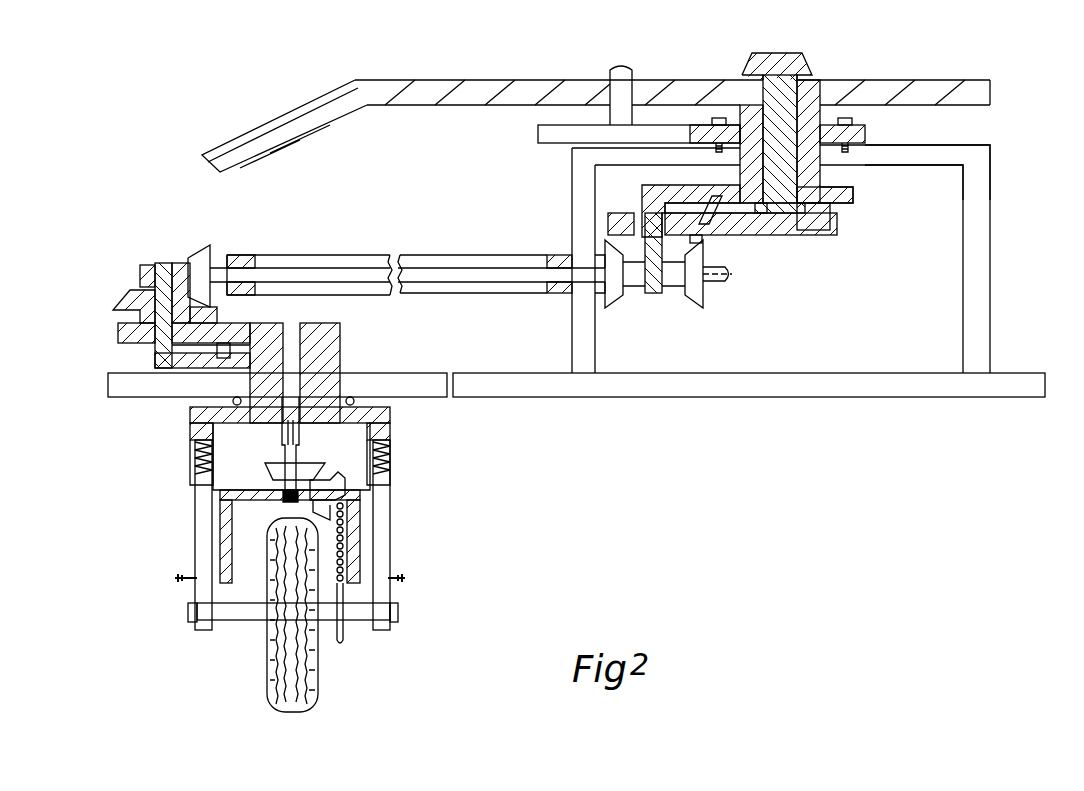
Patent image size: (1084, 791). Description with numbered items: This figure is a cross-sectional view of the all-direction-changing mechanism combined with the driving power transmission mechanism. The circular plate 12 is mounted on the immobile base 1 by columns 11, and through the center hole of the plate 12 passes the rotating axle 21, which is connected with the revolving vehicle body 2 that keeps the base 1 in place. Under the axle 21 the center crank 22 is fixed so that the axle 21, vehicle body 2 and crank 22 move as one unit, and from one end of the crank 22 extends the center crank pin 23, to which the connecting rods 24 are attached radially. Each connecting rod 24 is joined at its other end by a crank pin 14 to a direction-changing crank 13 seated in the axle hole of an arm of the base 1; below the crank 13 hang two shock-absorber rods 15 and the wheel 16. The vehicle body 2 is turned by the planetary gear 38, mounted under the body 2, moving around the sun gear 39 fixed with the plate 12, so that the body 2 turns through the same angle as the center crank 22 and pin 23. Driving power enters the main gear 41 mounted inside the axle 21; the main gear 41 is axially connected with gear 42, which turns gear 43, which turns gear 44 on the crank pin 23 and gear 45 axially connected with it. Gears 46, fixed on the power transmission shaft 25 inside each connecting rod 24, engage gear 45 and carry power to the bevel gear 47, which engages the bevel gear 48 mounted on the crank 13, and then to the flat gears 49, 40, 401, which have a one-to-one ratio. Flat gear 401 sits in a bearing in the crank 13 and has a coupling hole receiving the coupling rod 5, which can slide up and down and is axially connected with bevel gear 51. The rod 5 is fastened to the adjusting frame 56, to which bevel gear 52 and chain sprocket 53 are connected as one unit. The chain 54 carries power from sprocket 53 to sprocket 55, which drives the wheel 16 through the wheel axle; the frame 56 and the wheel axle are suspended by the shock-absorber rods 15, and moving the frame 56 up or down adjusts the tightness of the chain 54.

The immobile base 1 is at (680, 398).
The revolving vehicle body 2 is at (332, 93).
The coupling rod 5 is at (282, 443).
The columns 11 is at (572, 170).
The circular plate 12 is at (970, 147).
The direction-changing crank 13 is at (155, 350).
The crank pin 14 is at (162, 265).
The shock-absorber rods 15 is at (197, 503).
The wheel 16 is at (268, 675).
The rotating axle 21 is at (812, 105).
The center crank 22 is at (855, 203).
The center crank pin 23 is at (652, 295).
The connecting rods 24 is at (462, 293).
The power transmission shaft 25 is at (487, 277).
The planetary gear 38 is at (538, 133).
The sun gear 39 is at (843, 125).
The flat gear 40 is at (218, 342).
The flat gear 401 is at (327, 323).
The main gear 41 is at (790, 55).
The gear 42 is at (838, 235).
The gear 43 is at (735, 232).
The gear 44 is at (660, 240).
The gear 45 is at (702, 247).
The gears 46 is at (608, 305).
The bevel gear 47 is at (197, 247).
The bevel gear 48 is at (128, 293).
The flat gear 49 is at (118, 333).
The bevel gear 51 is at (266, 469).
The bevel gear 52 is at (323, 477).
The chain sprocket 53 is at (345, 480).
The chain 54 is at (345, 555).
The sprocket 55 is at (343, 640).
The adjusting frame 56 is at (360, 520).